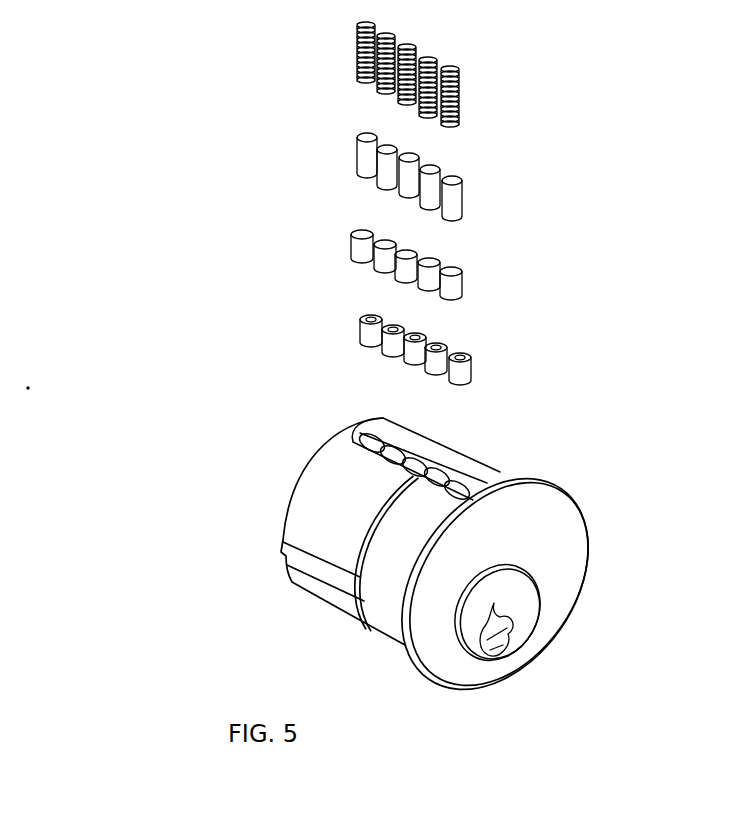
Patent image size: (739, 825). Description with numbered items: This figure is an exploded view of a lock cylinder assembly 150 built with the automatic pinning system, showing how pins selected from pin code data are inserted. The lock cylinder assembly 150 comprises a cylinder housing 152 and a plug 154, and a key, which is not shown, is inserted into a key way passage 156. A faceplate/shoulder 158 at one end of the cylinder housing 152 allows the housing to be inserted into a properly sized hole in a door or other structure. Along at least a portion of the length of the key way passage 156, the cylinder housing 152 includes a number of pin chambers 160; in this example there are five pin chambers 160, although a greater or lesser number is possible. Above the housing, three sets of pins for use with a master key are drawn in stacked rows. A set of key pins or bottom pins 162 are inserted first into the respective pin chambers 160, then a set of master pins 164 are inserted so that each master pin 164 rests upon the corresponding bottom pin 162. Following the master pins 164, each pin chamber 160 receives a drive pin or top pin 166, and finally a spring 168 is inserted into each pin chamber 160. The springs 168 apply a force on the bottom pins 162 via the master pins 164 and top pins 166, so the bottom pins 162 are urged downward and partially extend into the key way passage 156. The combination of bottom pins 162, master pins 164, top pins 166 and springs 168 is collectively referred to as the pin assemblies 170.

The lock cylinder assembly 150 is at (104, 412).
The cylinder housing 152 is at (318, 505).
The plug 154 is at (520, 600).
The key way passage 156 is at (505, 631).
The faceplate/shoulder 158 is at (558, 516).
The pin chambers 160 is at (356, 433).
The bottom pins 162 is at (458, 355).
The master pins 164 is at (448, 268).
The top pins 166 is at (447, 175).
The springs 168 is at (405, 42).
The pin assemblies 170 is at (566, 223).